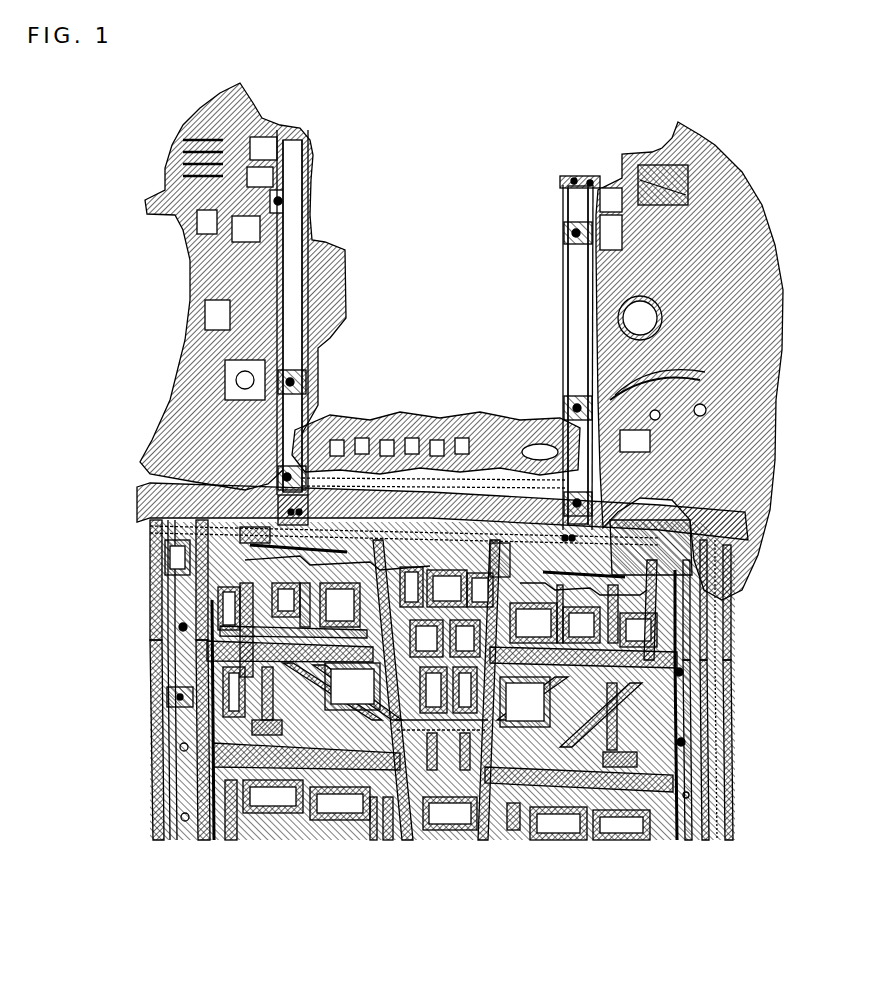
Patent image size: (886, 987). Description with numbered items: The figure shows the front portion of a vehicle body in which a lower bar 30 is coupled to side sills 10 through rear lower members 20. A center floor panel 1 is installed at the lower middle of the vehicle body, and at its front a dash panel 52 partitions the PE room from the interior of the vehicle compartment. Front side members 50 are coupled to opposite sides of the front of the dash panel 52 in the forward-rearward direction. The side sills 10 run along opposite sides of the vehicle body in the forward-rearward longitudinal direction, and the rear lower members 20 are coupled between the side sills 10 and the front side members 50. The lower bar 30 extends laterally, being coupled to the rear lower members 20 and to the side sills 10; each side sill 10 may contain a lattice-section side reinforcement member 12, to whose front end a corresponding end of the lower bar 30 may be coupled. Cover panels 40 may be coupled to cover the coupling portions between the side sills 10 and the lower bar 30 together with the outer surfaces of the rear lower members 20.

The center floor panel 1 is at (620, 707).
The side sills 10 is at (180, 765).
The side reinforcement member 12 is at (148, 587).
The rear lower members 20 is at (260, 483).
The lower bar 30 is at (363, 517).
The cover panels 40 is at (632, 475).
The front side members 50 is at (577, 297).
The dash panel 52 is at (473, 437).